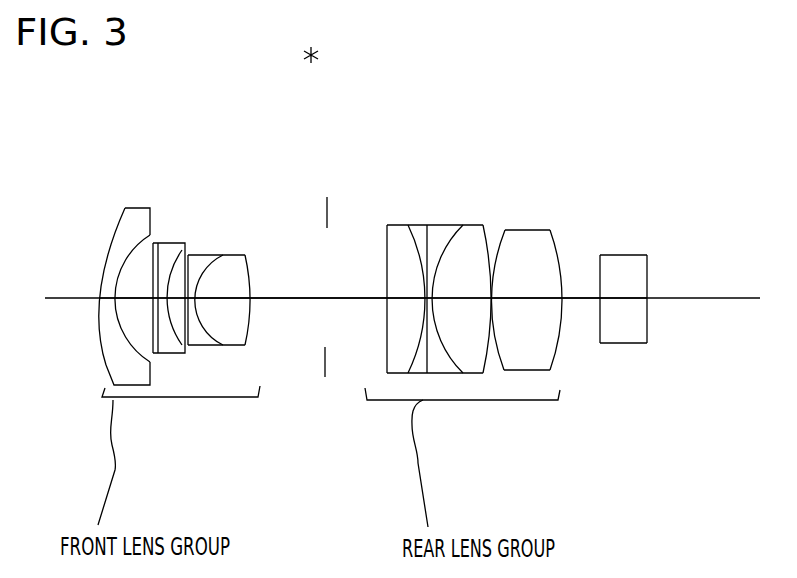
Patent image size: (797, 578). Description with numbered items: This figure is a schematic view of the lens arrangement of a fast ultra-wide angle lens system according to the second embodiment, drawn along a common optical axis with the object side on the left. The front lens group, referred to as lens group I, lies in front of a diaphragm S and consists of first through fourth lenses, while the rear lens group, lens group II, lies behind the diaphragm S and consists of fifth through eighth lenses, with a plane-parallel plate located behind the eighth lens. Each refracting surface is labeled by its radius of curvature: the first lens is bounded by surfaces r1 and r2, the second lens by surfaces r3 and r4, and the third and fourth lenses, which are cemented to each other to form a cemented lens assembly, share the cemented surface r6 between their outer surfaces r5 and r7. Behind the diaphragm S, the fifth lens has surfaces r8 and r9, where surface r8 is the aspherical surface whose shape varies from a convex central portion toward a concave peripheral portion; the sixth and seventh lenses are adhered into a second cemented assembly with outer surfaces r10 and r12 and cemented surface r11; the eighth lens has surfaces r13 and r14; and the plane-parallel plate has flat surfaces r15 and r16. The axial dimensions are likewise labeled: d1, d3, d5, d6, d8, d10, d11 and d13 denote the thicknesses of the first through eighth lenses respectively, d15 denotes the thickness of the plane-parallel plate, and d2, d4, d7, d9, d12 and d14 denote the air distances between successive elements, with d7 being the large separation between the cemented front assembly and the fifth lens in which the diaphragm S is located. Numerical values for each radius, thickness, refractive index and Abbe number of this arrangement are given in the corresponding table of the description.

The radius of curvature of first lens surface r1 is at (125, 208).
The radius of curvature of second lens surface r2 is at (152, 237).
The radius of curvature of third lens surface r3 is at (153, 243).
The radius of curvature of fourth lens surface r4 is at (185, 243).
The radius of curvature of fifth lens surface r5 is at (190, 253).
The radius of curvature of sixth lens surface r6 is at (223, 255).
The radius of curvature of seventh lens surface r7 is at (244, 255).
The radius of curvature of eighth lens surface r8 is at (387, 225).
The radius of curvature of ninth lens surface r9 is at (407, 225).
The radius of curvature of tenth lens surface r10 is at (428, 225).
The radius of curvature of eleventh lens surface r11 is at (466, 224).
The radius of curvature of twelfth lens surface r12 is at (493, 260).
The radius of curvature of thirteenth lens surface r13 is at (504, 230).
The radius of curvature of fourteenth lens surface r14 is at (550, 230).
The radius of curvature of fifteenth surface r15 is at (602, 255).
The radius of curvature of sixteenth surface r16 is at (648, 255).
The first lens thickness d1 is at (101, 298).
The first air distance d2 is at (132, 298).
The second lens thickness d3 is at (160, 298).
The second air distance d4 is at (185, 298).
The third lens thickness d5 is at (194, 298).
The fourth lens thickness d6 is at (222, 298).
The distance between lens groups d7 is at (319, 298).
The fifth lens thickness d8 is at (407, 298).
The air distance behind fifth lens d9 is at (424, 298).
The sixth lens thickness d10 is at (428, 298).
The seventh lens thickness d11 is at (468, 298).
The air distance behind seventh lens d12 is at (489, 298).
The eighth lens thickness d13 is at (530, 298).
The distance to plane-parallel plate d14 is at (580, 298).
The plane-parallel plate thickness d15 is at (625, 298).
The diaphragm S is at (327, 215).